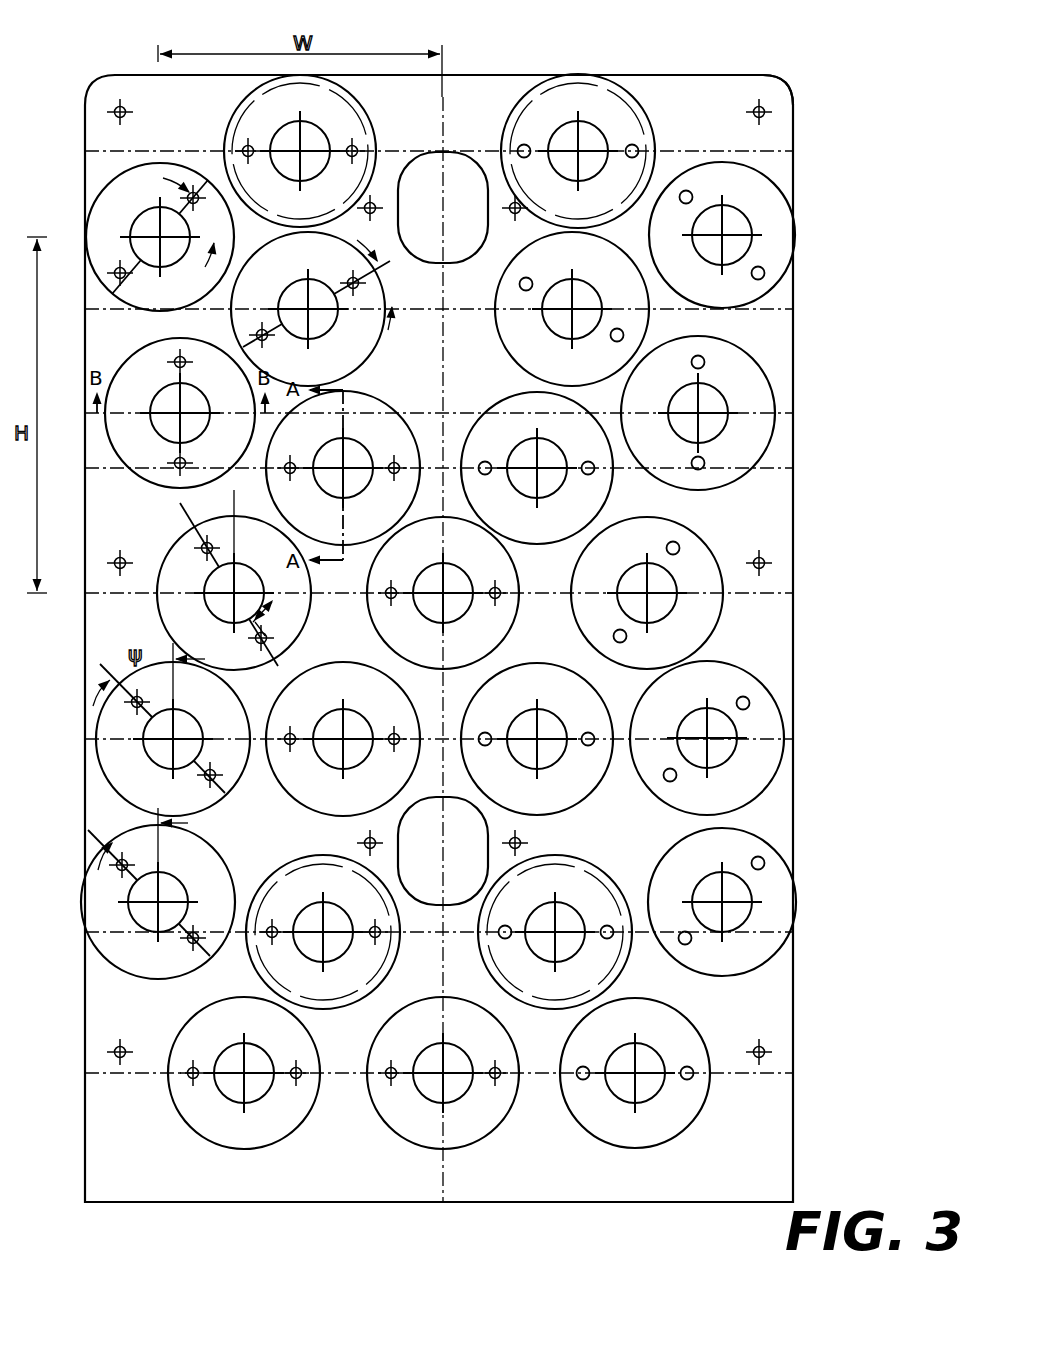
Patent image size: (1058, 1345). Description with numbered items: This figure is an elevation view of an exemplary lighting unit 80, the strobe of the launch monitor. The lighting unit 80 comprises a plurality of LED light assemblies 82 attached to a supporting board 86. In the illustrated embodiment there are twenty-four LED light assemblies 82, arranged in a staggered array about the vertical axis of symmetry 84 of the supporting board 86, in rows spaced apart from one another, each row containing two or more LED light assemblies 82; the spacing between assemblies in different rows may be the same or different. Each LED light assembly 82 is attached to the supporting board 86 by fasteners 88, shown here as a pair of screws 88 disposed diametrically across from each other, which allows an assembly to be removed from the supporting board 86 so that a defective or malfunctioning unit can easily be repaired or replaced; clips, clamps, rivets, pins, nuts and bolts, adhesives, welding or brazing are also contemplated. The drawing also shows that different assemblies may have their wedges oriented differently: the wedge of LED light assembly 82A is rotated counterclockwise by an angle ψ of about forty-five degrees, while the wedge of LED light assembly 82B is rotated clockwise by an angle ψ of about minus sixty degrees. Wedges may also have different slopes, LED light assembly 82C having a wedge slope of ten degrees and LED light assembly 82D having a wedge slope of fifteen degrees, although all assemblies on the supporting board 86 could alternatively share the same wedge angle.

The lighting unit 80 is at (679, 60).
The LED light assembly 82 is at (228, 124).
The LED light assembly 82A is at (103, 184).
The LED light assembly 82B is at (165, 615).
The LED light assembly 82C is at (237, 317).
The LED light assembly 82D is at (103, 920).
The vertical axis of symmetry 84 is at (444, 122).
The supporting board 86 is at (725, 95).
The fasteners 88 is at (293, 1078).